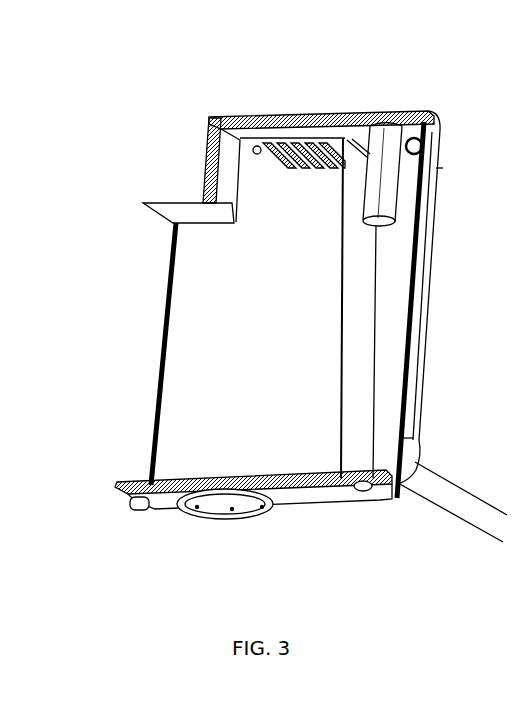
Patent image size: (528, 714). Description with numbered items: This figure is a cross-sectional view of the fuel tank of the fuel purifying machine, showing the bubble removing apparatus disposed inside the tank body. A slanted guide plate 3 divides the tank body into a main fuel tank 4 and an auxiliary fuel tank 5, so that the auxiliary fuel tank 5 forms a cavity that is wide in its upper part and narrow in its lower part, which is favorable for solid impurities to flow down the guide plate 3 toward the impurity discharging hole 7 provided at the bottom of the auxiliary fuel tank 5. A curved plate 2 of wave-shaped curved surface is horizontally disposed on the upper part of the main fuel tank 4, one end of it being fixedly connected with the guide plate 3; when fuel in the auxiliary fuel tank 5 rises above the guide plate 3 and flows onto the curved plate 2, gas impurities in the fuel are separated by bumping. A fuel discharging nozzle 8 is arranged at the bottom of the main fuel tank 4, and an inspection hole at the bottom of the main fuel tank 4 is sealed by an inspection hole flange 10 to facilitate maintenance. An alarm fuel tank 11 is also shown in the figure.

The curved plate 2 is at (283, 143).
The guide plate 3 is at (357, 313).
The main fuel tank 4 is at (215, 257).
The auxiliary fuel tank 5 is at (385, 358).
The impurity discharging hole 7 is at (273, 498).
The fuel discharging nozzle 8 is at (140, 508).
The inspection hole flange 10 is at (207, 513).
The alarm fuel tank 11 is at (385, 160).